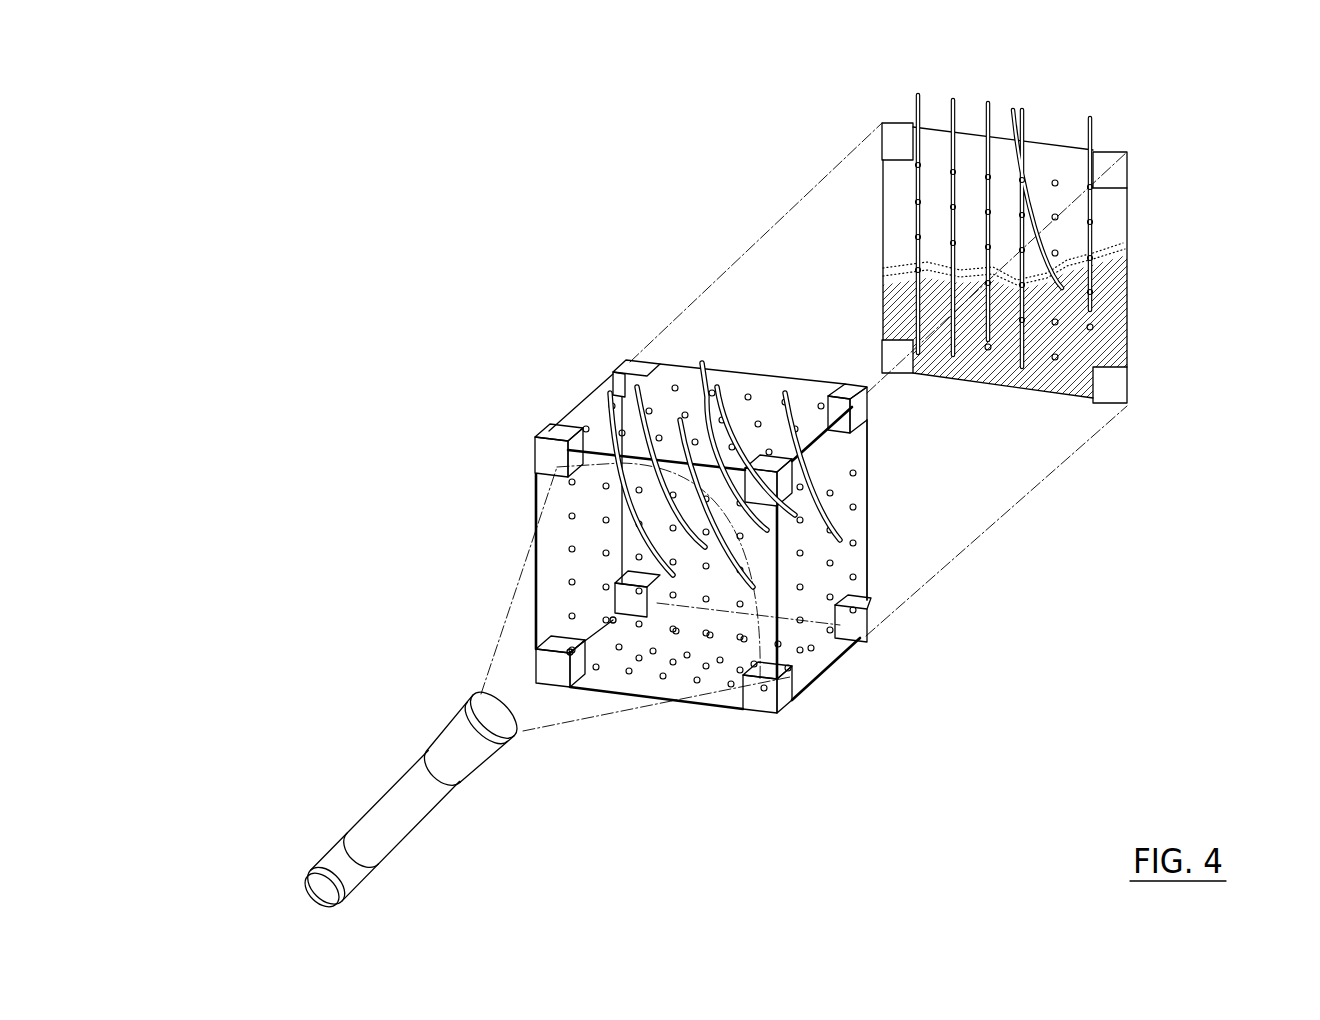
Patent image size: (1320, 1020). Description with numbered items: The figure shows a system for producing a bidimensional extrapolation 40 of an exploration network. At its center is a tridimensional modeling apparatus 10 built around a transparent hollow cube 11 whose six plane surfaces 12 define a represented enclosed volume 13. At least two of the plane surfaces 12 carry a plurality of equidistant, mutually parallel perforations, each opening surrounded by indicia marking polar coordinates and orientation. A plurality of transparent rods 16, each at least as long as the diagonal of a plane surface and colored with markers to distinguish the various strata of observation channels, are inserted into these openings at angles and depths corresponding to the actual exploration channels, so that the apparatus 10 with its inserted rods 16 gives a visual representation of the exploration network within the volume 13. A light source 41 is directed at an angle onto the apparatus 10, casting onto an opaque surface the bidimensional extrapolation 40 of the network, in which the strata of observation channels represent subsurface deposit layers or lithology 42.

The tridimensional modeling apparatus 10 is at (660, 541).
The transparent hollow cube 11 is at (828, 660).
The plane surfaces 12 is at (769, 388).
The enclosed volume 13 is at (787, 647).
The transparent rods 16 is at (707, 377).
The bidimensional extrapolation 40 is at (1062, 249).
The light source 41 is at (655, 718).
The lithology 42 is at (892, 288).